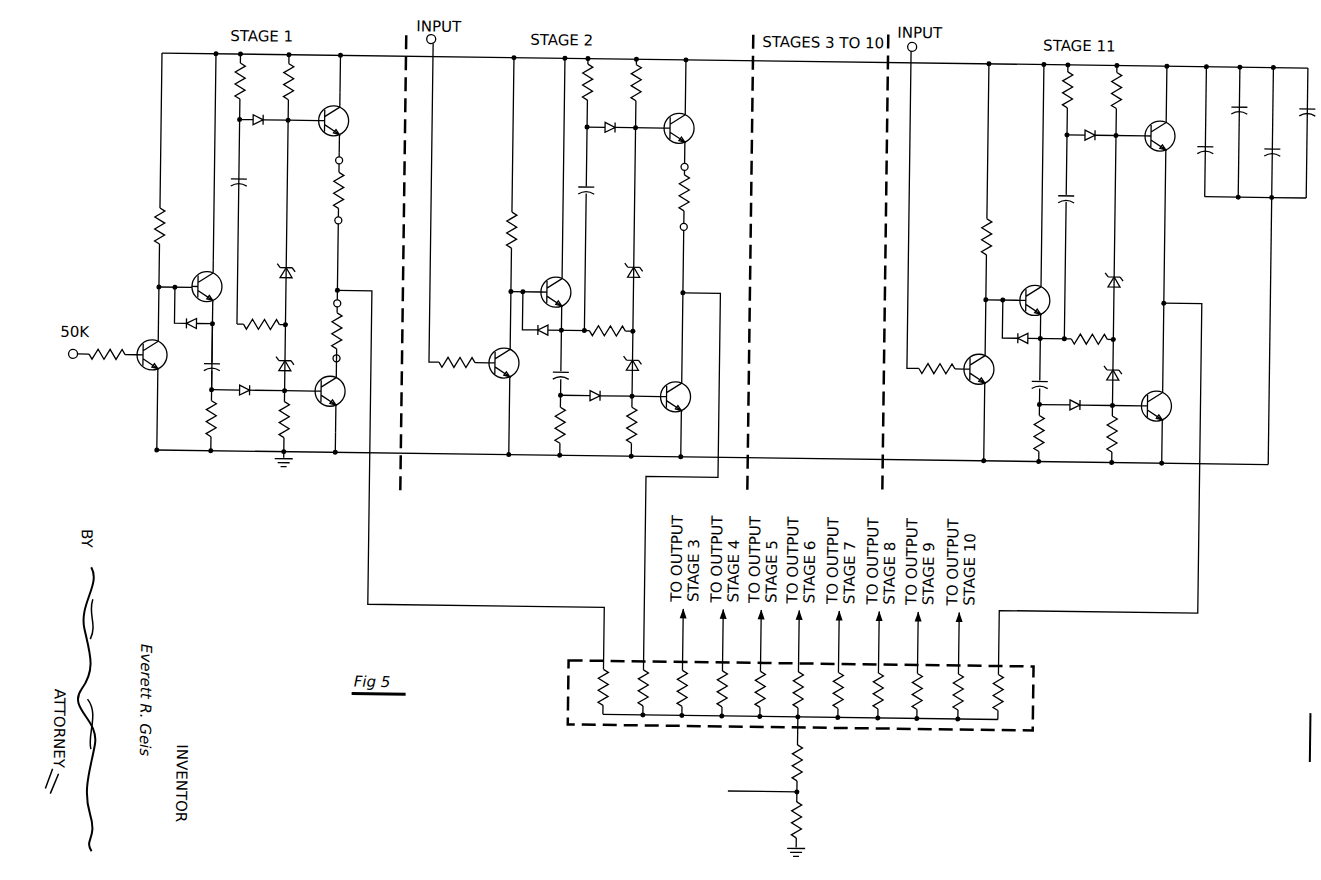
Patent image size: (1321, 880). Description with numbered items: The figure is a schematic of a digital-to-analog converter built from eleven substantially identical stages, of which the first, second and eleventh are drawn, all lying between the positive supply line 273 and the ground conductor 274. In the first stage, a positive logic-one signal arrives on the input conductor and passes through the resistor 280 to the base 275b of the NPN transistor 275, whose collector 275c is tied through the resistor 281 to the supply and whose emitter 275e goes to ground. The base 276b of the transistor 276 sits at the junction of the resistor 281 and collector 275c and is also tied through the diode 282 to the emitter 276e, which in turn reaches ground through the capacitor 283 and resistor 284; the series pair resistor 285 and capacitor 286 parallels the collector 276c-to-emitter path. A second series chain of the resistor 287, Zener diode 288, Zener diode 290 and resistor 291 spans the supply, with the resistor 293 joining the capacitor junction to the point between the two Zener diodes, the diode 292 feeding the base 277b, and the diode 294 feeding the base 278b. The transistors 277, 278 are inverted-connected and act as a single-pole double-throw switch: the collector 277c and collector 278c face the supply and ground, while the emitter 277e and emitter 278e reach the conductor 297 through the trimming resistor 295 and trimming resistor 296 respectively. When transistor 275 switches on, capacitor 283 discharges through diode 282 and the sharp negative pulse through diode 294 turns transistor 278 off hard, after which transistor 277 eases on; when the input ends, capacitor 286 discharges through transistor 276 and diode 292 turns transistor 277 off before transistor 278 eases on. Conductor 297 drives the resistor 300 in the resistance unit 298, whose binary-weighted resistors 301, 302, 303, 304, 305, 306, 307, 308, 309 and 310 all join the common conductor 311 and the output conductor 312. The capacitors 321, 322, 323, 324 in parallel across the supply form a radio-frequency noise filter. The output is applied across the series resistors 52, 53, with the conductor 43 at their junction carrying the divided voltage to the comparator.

The positive supply line 273 is at (355, 53).
The ground conductor 274 is at (246, 451).
The transistor 275 is at (167, 371).
The base of transistor 275 275b is at (136, 354).
The collector of transistor 275 275c is at (160, 338).
The emitter of transistor 275 275e is at (160, 378).
The transistor 276 is at (226, 284).
The base of transistor 276 276b is at (178, 277).
The collector of transistor 276 276c is at (214, 270).
The emitter of transistor 276 276e is at (214, 304).
The transistor 277 is at (350, 119).
The base of transistor 277 277b is at (317, 128).
The collector of transistor 277 277c is at (342, 103).
The emitter of transistor 277 277e is at (343, 132).
The transistor 278 is at (340, 403).
The base of transistor 278 278b is at (316, 392).
The collector of transistor 278 278c is at (339, 418).
The emitter of transistor 278 278e is at (341, 383).
The resistor 280 is at (106, 360).
The resistor 281 is at (166, 220).
The diode 282 is at (196, 328).
The capacitor 283 is at (218, 367).
The resistor 284 is at (212, 419).
The resistor 285 is at (245, 72).
The capacitor 286 is at (243, 178).
The resistor 287 is at (294, 72).
The Zener diode 288 is at (293, 270).
The Zener diode 290 is at (293, 362).
The resistor 291 is at (285, 418).
The diode 292 is at (259, 113).
The resistor 293 is at (262, 320).
The diode 294 is at (249, 384).
The trimming resistor 295 is at (346, 186).
The trimming resistor 296 is at (336, 330).
The conductor 297 is at (358, 288).
The resistance unit 298 is at (619, 732).
The resistor 300 is at (609, 687).
The resistor 301 is at (649, 687).
The resistor 302 is at (688, 687).
The resistor 303 is at (728, 687).
The resistor 304 is at (766, 687).
The resistor 305 is at (804, 687).
The resistor 306 is at (844, 687).
The resistor 307 is at (884, 687).
The resistor 308 is at (923, 687).
The resistor 309 is at (964, 687).
The resistor 310 is at (1004, 687).
The common conductor 311 is at (716, 710).
The output conductor 312 is at (806, 725).
The capacitor 321 is at (1204, 143).
The capacitor 322 is at (1240, 103).
The capacitor 323 is at (1272, 144).
The capacitor 324 is at (1308, 104).
The input conductor 43 is at (751, 783).
The resistor 52 is at (801, 752).
The resistor 53 is at (801, 812).